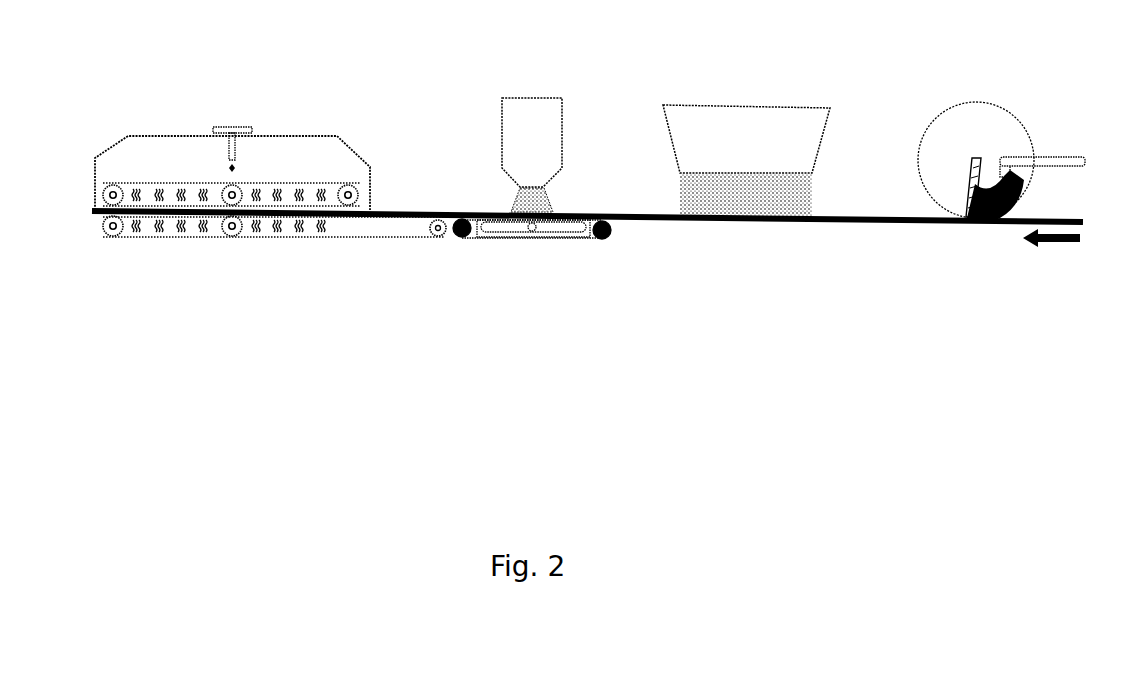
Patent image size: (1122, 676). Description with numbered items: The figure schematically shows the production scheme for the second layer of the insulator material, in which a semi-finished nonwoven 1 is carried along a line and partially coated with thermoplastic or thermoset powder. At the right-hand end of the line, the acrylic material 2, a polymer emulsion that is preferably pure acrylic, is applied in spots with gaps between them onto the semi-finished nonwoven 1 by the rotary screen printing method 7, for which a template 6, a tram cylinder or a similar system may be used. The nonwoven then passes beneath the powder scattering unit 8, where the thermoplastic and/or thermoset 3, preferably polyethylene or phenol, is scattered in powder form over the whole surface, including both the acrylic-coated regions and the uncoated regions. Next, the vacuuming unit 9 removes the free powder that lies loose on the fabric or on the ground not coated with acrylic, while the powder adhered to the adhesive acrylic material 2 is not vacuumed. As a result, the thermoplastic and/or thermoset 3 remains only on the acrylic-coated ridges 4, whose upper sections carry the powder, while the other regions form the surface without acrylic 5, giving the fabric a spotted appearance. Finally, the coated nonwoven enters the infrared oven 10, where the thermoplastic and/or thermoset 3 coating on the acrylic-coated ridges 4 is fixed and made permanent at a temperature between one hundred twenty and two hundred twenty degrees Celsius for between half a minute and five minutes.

The semi-finished nonwoven 1 is at (1013, 227).
The acrylic material 2 is at (957, 227).
The thermoplastic and/or thermoset 3 is at (543, 237).
The acrylic-coated ridges 4 is at (463, 210).
The surface without acrylic 5 is at (430, 210).
The template 6 is at (92, 210).
The rotary screen printing method 7 is at (1000, 127).
The powder scattering unit 8 is at (760, 150).
The vacuuming unit 9 is at (530, 143).
The infrared oven 10 is at (282, 157).